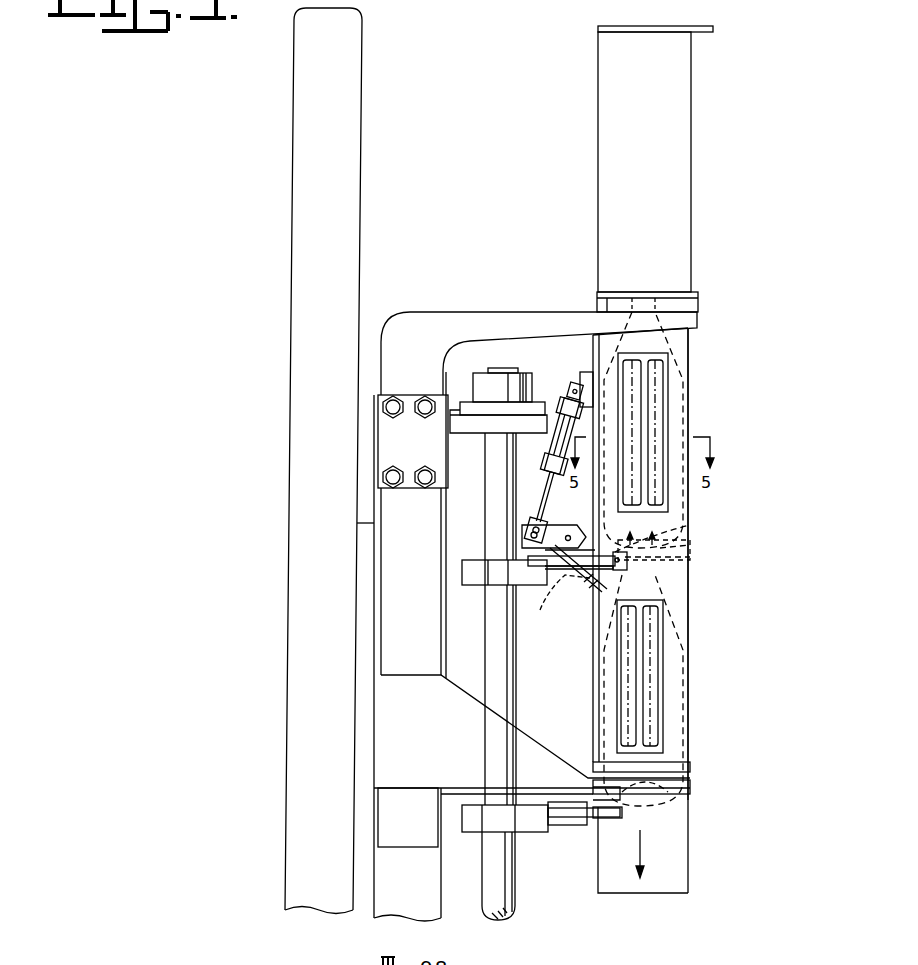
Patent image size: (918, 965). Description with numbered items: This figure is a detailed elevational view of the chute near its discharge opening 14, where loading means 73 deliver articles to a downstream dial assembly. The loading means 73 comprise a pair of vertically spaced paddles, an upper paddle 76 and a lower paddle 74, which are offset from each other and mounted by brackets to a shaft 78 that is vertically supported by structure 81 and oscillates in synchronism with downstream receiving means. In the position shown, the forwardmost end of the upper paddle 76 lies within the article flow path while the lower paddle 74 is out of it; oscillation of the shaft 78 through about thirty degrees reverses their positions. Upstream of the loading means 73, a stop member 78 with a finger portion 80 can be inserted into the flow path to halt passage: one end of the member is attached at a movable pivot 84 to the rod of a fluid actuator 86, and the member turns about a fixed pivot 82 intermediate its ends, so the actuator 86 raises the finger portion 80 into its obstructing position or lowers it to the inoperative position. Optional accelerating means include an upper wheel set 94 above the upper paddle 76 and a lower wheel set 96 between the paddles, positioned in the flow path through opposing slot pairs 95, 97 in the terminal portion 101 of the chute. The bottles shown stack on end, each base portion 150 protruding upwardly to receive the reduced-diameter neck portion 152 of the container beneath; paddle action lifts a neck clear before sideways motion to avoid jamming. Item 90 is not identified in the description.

The discharge opening 14 is at (645, 905).
The loading means 73 is at (752, 582).
The lower paddle 74 is at (606, 822).
The upper paddle 76 is at (596, 592).
The shaft 78 is at (547, 533).
The finger portion 80 is at (591, 574).
The structure 81 is at (469, 312).
The fixed pivot 82 is at (550, 544).
The movable pivot 84 is at (532, 534).
The fluid actuator 86 is at (549, 385).
The link rod 90 is at (540, 610).
The upper wheel set 94 is at (670, 382).
The upper slot pair 95 is at (668, 423).
The lower wheel set 96 is at (666, 665).
The lower slot pair 97 is at (664, 692).
The terminal portion 101 is at (682, 585).
The base portion 150 is at (690, 530).
The neck portion 152 is at (662, 301).